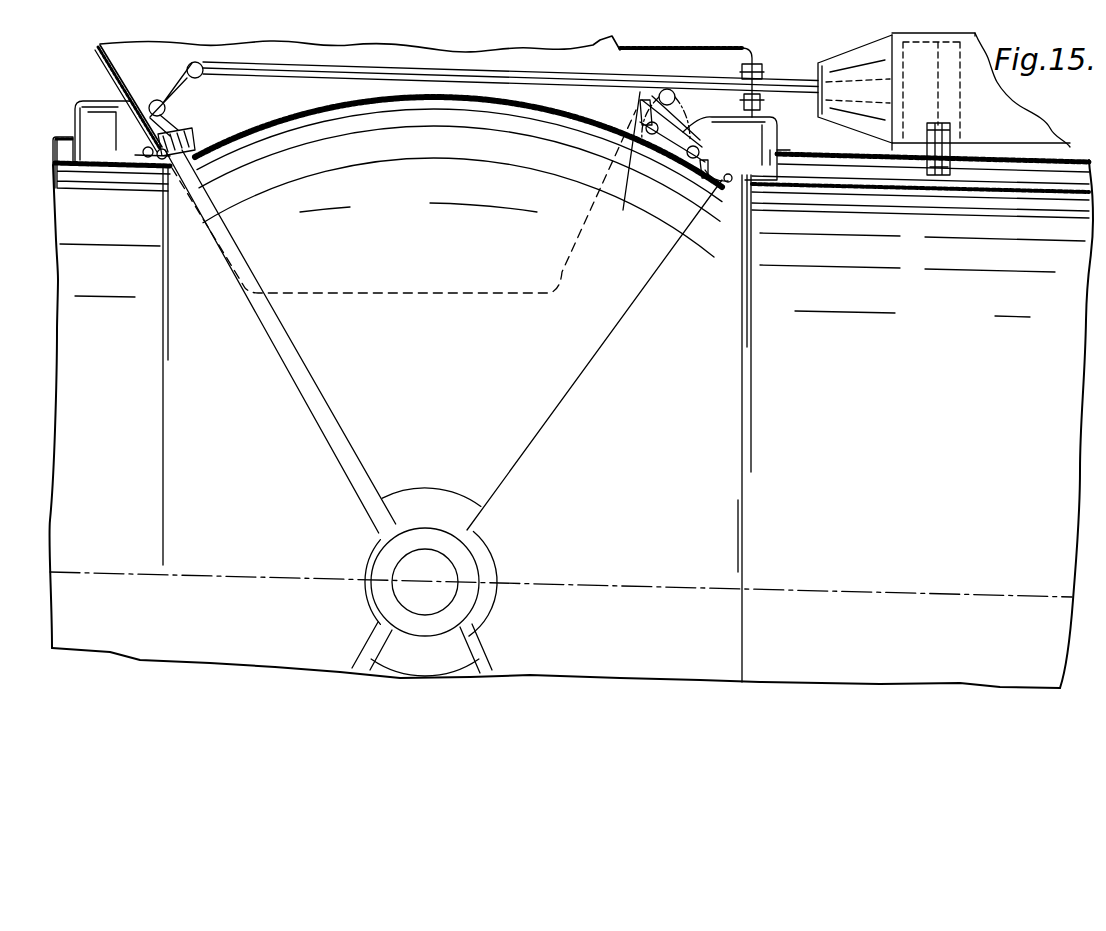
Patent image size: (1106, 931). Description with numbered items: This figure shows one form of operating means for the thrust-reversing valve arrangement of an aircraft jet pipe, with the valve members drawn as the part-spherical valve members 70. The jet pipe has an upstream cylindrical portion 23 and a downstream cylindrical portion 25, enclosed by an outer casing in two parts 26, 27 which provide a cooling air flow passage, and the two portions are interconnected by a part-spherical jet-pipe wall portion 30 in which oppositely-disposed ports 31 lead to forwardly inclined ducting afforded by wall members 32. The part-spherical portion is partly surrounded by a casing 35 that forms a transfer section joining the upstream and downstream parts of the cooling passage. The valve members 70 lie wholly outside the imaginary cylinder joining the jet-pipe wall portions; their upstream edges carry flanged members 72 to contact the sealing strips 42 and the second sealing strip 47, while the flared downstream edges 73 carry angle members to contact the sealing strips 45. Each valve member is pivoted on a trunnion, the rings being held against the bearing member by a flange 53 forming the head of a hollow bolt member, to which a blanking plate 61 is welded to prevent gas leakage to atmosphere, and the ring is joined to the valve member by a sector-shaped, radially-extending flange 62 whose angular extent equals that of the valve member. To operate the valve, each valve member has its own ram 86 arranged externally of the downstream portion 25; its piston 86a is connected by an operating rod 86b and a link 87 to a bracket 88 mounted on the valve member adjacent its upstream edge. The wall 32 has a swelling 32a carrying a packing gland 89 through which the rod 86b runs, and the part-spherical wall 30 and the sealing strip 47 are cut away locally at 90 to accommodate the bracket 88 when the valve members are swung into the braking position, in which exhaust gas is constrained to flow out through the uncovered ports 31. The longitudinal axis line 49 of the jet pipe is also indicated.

The upstream cylindrical portion 23 is at (66, 168).
The downstream cylindrical portion 25 is at (948, 186).
The outer casing part 26 is at (65, 137).
The outer casing part 27 is at (853, 160).
The part-spherical jet-pipe wall portion 30 is at (152, 146).
The ports 31 is at (488, 297).
The wall members 32 is at (102, 46).
The swelling 32a is at (748, 49).
The casing 35 is at (108, 70).
The sealing strips 42 is at (155, 155).
The sealing strips 45 is at (722, 185).
The second sealing strip 47 is at (637, 180).
The axis line 49 is at (603, 583).
The flange 53 is at (477, 593).
The blanking plates 61 is at (440, 570).
The sector-shaped radially-extending flange 62 is at (423, 498).
The part-spherical valve members 70 is at (372, 100).
The flanged members 72 is at (200, 168).
The downstream edges 73 is at (735, 182).
The ram 86 is at (1018, 114).
The piston 86a is at (928, 72).
The operating rod 86b is at (300, 80).
The link 87 is at (182, 83).
The bracket 88 is at (170, 123).
The packing gland 89 is at (764, 100).
The cut-away 90 is at (660, 160).